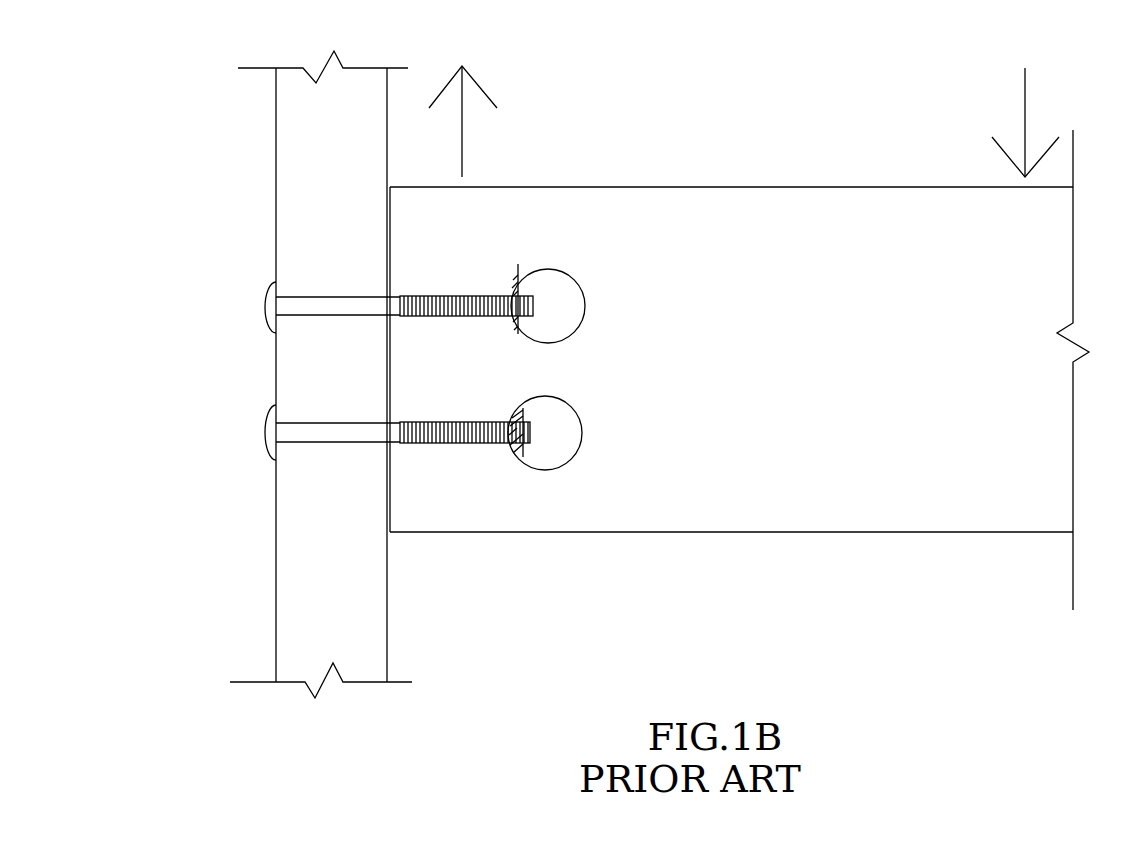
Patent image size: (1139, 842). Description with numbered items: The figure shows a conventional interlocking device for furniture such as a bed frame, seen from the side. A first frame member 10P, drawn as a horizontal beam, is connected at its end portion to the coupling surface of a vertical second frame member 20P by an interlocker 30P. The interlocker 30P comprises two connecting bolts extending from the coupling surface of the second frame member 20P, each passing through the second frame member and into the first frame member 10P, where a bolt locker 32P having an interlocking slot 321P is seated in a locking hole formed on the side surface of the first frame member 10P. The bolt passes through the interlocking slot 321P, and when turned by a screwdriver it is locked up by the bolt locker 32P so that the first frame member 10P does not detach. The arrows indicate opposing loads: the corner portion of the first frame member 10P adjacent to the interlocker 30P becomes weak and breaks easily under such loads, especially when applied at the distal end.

The first frame member 10P is at (702, 227).
The second frame member 20P is at (320, 197).
The interlocker 30P is at (401, 310).
The bolt locker 32P is at (522, 278).
The interlocking slot 321P is at (549, 447).